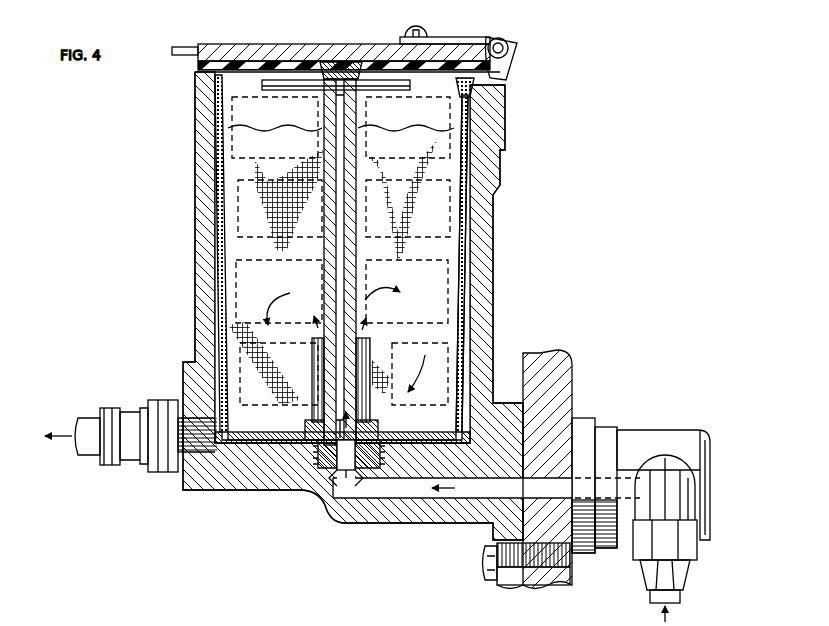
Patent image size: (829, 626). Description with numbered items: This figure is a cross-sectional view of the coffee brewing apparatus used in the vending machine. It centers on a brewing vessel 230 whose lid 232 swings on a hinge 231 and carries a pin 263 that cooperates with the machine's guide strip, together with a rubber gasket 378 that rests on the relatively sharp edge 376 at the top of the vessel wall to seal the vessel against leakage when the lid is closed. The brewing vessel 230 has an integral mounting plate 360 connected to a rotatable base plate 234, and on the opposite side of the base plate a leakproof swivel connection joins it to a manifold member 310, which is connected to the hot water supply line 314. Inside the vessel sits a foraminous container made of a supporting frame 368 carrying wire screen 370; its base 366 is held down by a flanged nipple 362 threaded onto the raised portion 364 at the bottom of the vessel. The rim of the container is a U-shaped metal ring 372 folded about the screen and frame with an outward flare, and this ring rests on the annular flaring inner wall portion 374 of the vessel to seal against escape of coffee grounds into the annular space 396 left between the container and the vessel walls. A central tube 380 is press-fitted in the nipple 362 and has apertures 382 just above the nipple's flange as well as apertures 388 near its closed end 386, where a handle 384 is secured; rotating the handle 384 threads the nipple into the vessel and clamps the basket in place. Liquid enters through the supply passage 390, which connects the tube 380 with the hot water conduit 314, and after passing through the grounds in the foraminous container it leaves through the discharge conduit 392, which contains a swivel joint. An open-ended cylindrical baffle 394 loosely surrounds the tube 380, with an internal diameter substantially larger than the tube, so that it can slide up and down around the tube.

The brewing vessel 230 is at (488, 282).
The hinge 231 is at (508, 40).
The lid 232 is at (300, 52).
The rotatable base plate 234 is at (558, 372).
The pin 263 is at (192, 50).
The manifold member 310 is at (670, 428).
The hot water supply line 314 is at (688, 568).
The mounting plate 360 is at (497, 578).
The flanged nipple 362 is at (378, 427).
The raised portion 364 is at (304, 444).
The base 366 is at (260, 440).
The supporting frame 368 is at (466, 325).
The wire screen 370 is at (312, 287).
The U-shaped metal ring 372 is at (472, 88).
The annular flaring inner wall portion 374 is at (218, 78).
The sharp edge 376 is at (196, 72).
The rubber gasket 378 is at (237, 66).
The central tube 380 is at (352, 262).
The apertures 382 is at (366, 392).
The handle 384 is at (410, 86).
The closed end 386 is at (347, 70).
The apertures 388 is at (356, 104).
The supply passage 390 is at (393, 490).
The discharge conduit 392 is at (134, 408).
The cylindrical baffle 394 is at (372, 346).
The annular space 396 is at (470, 352).